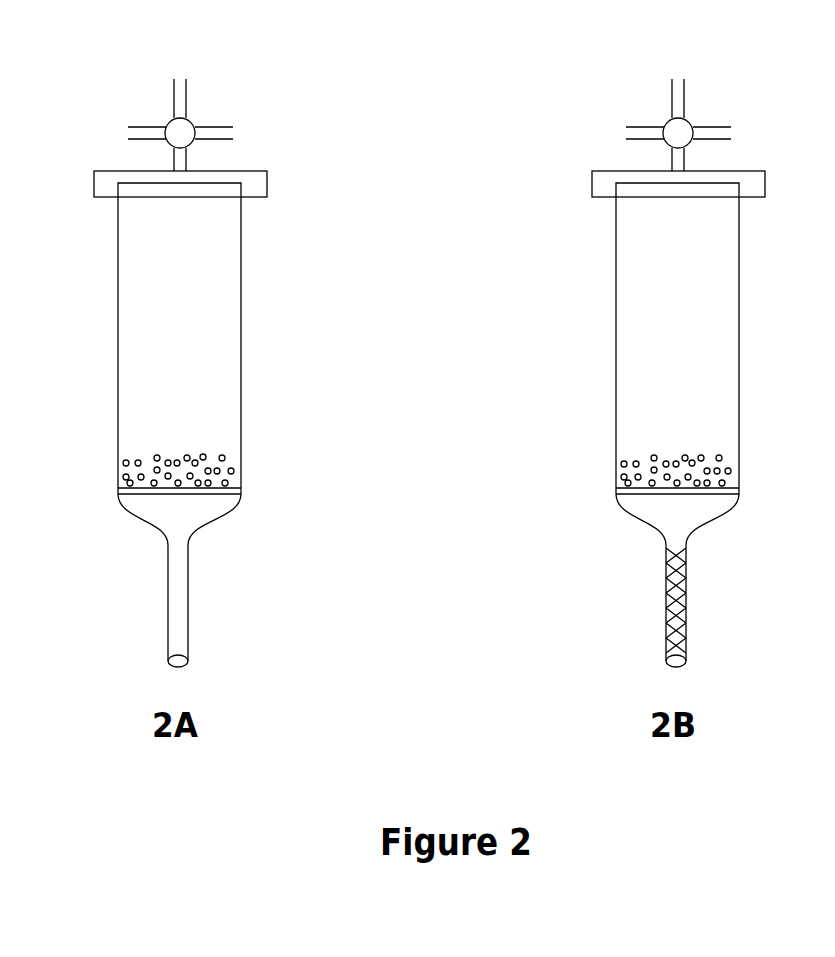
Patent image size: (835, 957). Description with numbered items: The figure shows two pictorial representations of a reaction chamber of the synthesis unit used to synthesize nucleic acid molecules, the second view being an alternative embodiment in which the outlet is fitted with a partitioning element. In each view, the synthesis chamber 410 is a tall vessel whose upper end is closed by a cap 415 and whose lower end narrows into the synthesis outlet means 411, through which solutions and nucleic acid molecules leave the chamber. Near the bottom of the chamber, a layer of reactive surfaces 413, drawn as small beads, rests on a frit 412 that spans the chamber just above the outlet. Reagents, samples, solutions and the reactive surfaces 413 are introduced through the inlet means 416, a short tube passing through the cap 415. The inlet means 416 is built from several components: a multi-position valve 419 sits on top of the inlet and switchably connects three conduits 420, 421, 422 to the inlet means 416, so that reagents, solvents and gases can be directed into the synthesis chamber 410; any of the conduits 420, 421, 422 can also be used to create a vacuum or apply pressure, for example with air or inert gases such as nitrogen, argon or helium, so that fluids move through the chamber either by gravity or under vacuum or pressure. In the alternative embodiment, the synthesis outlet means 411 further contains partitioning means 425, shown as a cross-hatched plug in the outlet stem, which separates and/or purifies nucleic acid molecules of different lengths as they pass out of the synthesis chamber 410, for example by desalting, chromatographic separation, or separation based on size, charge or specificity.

In FIG. 2A, the synthesis chamber 410 is at (252, 312).
In FIG. 2B, the synthesis chamber 410 is at (602, 312).
In FIG. 2A, the synthesis outlet means 411 is at (195, 577).
In FIG. 2B, the synthesis outlet means 411 is at (658, 577).
In FIG. 2A, the frit 412 is at (248, 492).
In FIG. 2B, the frit 412 is at (605, 492).
In FIG. 2A, the reactive surfaces 413 is at (213, 449).
In FIG. 2B, the reactive surfaces 413 is at (642, 449).
In FIG. 2A, the cap 415 is at (273, 187).
In FIG. 2B, the cap 415 is at (585, 187).
In FIG. 2A, the inlet means 416 is at (212, 155).
In FIG. 2B, the inlet means 416 is at (647, 155).
In FIG. 2A, the multi-position valve 419 is at (197, 116).
In FIG. 2B, the multi-position valve 419 is at (695, 116).
In FIG. 2A, the conduit 420 is at (243, 133).
In FIG. 2B, the conduit 420 is at (741, 133).
In FIG. 2A, the conduit 421 is at (183, 77).
In FIG. 2B, the conduit 421 is at (681, 77).
In FIG. 2A, the conduit 422 is at (118, 133).
In FIG. 2B, the conduit 422 is at (620, 133).
In FIG. 2B, the partitioning means 425 is at (678, 608).